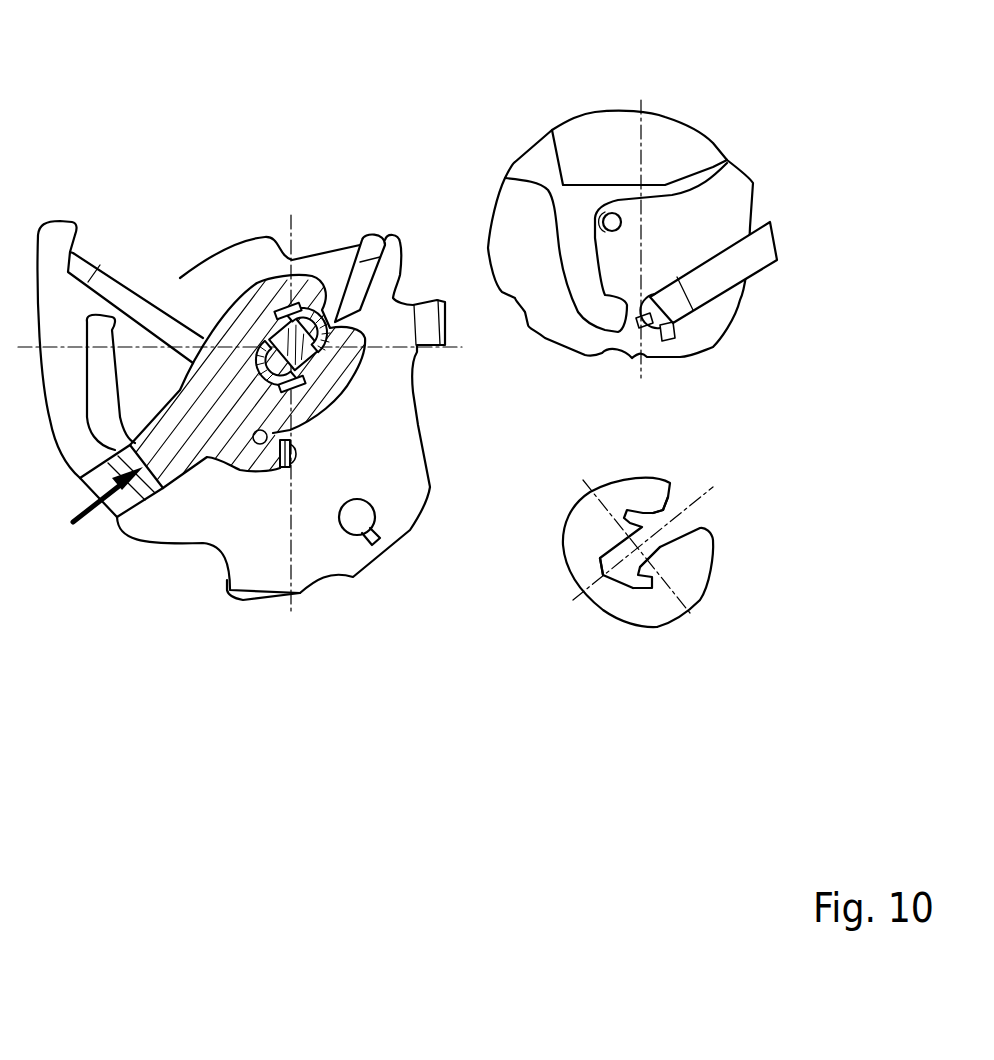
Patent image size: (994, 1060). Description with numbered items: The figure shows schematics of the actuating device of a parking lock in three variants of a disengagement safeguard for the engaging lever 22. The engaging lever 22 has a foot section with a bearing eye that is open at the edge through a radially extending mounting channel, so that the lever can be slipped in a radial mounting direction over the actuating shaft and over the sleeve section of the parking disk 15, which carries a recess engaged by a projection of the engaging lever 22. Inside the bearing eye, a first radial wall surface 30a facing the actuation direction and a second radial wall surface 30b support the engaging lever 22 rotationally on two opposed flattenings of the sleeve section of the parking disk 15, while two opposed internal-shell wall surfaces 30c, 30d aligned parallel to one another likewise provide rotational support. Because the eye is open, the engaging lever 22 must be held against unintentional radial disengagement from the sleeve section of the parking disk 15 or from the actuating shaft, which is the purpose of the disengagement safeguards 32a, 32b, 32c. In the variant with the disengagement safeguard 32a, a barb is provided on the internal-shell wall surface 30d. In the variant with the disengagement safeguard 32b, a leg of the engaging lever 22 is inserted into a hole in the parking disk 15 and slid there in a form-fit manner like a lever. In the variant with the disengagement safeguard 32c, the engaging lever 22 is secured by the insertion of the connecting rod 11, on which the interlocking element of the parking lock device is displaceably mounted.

The connecting rod 11 is at (713, 282).
The parking disk 15 is at (392, 497).
The engaging lever 22 is at (200, 428).
The first radial wall surface 30a is at (305, 385).
The second radial wall surface 30b is at (272, 318).
The internal-shell wall surface 30c is at (635, 545).
The internal-shell wall surface 30d is at (663, 535).
The disengagement safeguard 32a is at (682, 551).
The disengagement safeguard 32b is at (302, 467).
The disengagement safeguard 32c is at (650, 335).